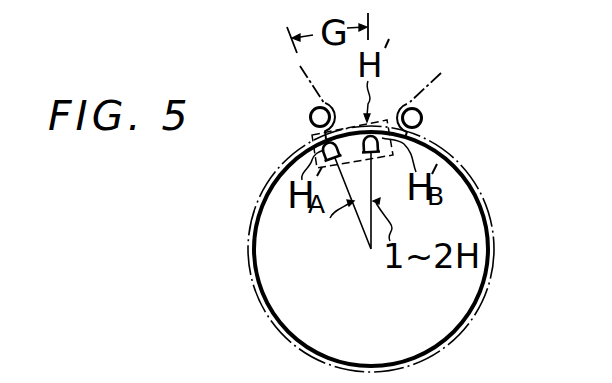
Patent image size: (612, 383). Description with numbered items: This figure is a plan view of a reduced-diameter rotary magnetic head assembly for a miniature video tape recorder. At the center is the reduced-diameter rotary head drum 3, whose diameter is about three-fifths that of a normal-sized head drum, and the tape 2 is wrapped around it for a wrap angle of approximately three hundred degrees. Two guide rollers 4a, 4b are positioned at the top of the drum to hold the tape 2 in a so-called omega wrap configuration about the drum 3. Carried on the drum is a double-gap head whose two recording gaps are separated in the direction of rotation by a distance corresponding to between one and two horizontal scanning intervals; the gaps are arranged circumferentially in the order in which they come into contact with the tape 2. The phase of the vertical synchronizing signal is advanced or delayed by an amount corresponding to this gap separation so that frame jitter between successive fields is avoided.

The tape 2 is at (493, 282).
The rotary head drum 3 is at (474, 318).
The guide roller 4a is at (310, 116).
The guide roller 4b is at (423, 118).